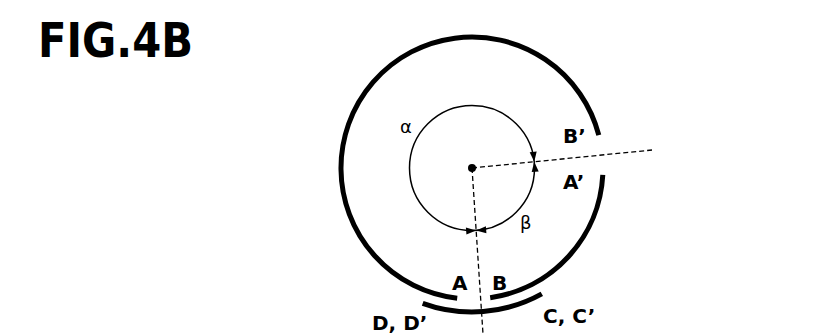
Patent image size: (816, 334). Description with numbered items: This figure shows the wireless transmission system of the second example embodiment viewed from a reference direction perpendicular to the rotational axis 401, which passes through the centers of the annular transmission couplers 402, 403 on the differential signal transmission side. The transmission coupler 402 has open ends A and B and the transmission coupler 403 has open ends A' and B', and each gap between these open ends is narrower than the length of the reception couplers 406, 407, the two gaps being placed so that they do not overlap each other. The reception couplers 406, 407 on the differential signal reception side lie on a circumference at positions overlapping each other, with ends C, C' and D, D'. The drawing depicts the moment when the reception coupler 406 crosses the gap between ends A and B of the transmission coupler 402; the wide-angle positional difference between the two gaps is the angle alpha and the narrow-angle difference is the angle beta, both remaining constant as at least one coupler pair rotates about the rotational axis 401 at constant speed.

The rotational axis 401 is at (472, 163).
The transmission line coupler 402 is at (434, 156).
The transmission line coupler 403 is at (338, 90).
The transmission line coupler 406 is at (572, 284).
The transmission line coupler 407 is at (558, 295).